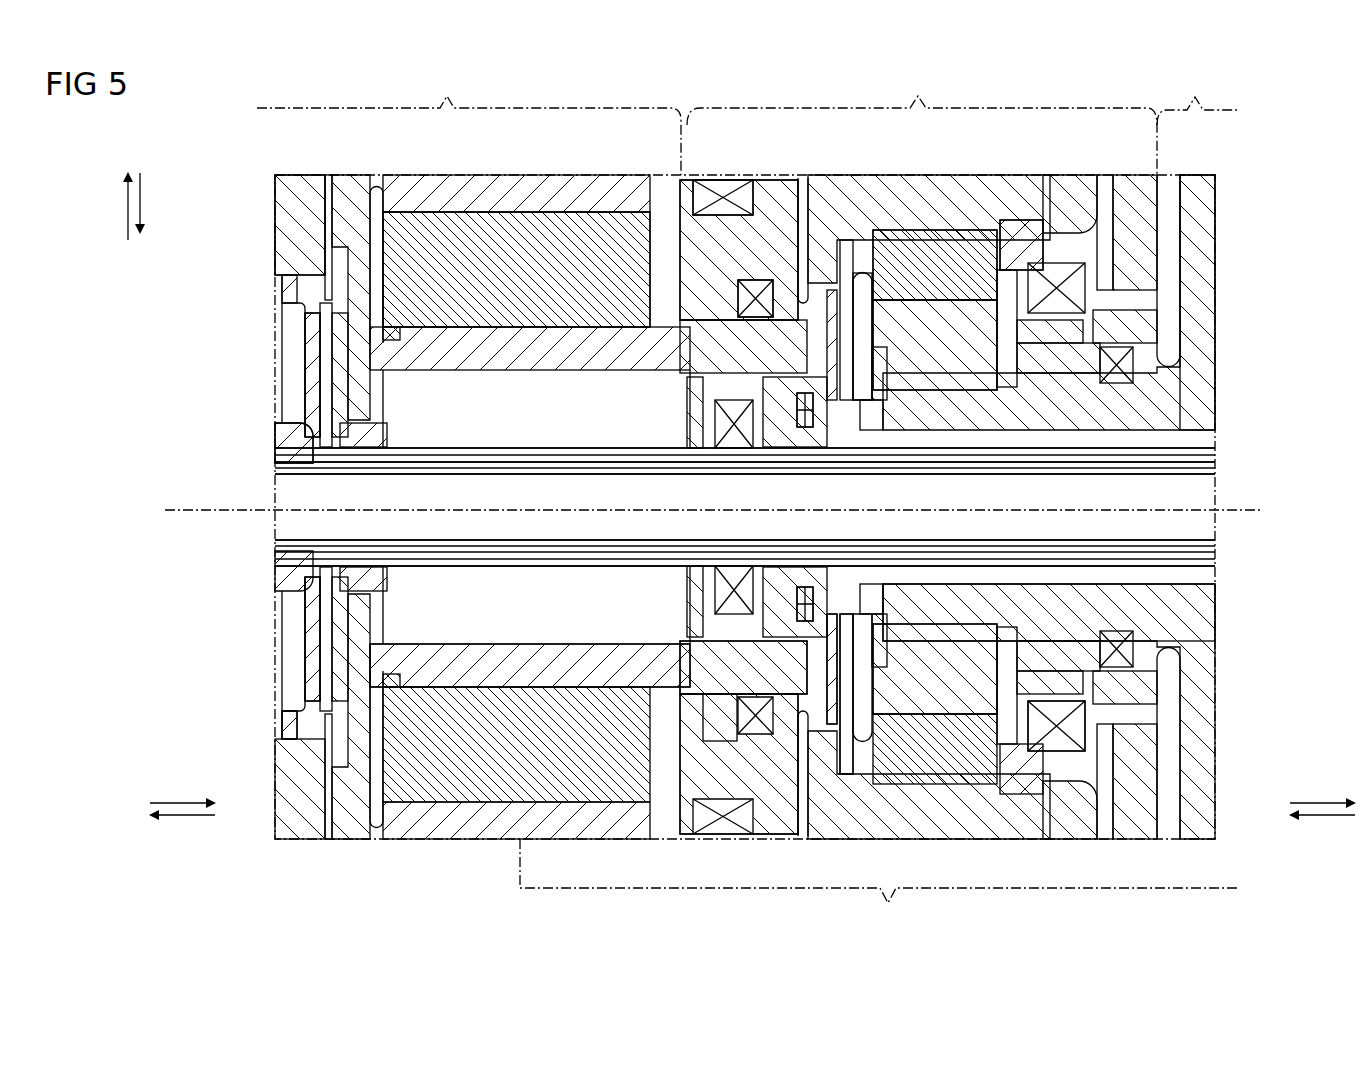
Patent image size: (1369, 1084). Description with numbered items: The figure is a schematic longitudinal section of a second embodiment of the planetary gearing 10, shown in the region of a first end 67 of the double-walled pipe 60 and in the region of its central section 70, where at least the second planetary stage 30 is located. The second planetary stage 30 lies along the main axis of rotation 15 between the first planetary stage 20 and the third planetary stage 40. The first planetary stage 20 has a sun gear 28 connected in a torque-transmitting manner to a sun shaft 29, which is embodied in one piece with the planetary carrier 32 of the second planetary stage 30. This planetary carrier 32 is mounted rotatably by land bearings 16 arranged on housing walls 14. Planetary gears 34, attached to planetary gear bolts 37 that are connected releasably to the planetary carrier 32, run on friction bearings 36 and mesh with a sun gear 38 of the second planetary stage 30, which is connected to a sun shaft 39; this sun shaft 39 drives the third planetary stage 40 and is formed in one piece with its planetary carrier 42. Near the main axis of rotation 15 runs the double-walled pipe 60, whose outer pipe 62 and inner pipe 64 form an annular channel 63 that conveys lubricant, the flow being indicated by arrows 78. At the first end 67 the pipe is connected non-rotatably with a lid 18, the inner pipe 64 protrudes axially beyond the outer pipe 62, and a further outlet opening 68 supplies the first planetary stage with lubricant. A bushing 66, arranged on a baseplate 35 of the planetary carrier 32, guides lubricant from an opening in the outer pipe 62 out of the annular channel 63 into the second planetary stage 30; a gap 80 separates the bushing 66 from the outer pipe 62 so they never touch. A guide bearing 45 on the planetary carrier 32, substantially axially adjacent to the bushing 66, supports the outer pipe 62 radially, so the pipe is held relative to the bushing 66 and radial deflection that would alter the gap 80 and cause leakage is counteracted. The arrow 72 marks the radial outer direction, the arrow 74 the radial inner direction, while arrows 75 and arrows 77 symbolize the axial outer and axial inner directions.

The planetary gearing 10 is at (1262, 144).
The housing walls 14 is at (672, 182).
The main axis of rotation 15 is at (205, 512).
The land bearings 16 is at (701, 178).
The lid 18 is at (305, 640).
The first planetary stage 20 is at (469, 119).
The sun gear 28 is at (553, 235).
The sun shaft 29 is at (473, 663).
The second planetary stage 30 is at (922, 119).
The planetary carrier 32 is at (790, 680).
The planetary gears 34 is at (922, 245).
The baseplate 35 is at (818, 625).
The friction bearings 36 is at (953, 212).
The planetary gear bolts 37 is at (1012, 200).
The sun gear 38 is at (973, 677).
The sun shaft 39 is at (943, 613).
The third planetary stage 40 is at (1197, 94).
The planetary carrier 42 is at (1212, 296).
The guide bearing 45 is at (737, 673).
The double-walled pipe 60 is at (1224, 541).
The outer pipe 62 is at (1216, 450).
The annular channel 63 is at (1216, 461).
The inner pipe 64 is at (1216, 470).
The bushing 66 is at (843, 605).
The first end 67 is at (268, 465).
The outlet opening 68 is at (333, 440).
The central section 70 is at (880, 889).
The arrow 72 is at (125, 215).
The arrow 74 is at (143, 200).
The arrows 75 is at (188, 820).
The arrows 77 is at (175, 800).
The arrows 78 is at (810, 470).
The gap 80 is at (858, 290).